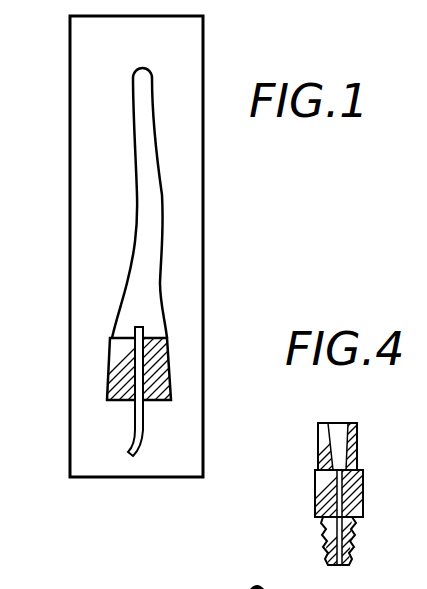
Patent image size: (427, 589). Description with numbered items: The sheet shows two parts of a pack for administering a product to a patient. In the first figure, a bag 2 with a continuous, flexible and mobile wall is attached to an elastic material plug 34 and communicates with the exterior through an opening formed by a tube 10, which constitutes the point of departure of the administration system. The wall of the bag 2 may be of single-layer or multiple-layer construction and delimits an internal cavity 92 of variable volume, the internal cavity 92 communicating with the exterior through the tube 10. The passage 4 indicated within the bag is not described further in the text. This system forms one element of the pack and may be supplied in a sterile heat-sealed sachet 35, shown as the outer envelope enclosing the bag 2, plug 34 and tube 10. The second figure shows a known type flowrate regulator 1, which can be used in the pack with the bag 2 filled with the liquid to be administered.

In FIG. 1, the sterile heat-sealed sachet 35 is at (85, 97).
In FIG. 1, the bag 2 is at (165, 192).
In FIG. 1, the tube passage 4 is at (128, 195).
In FIG. 1, the internal cavity 92 is at (138, 292).
In FIG. 1, the elastic material plug 34 is at (123, 358).
In FIG. 1, the tube 10 is at (130, 427).
In FIG. 4, the flowrate regulator 1 is at (315, 490).